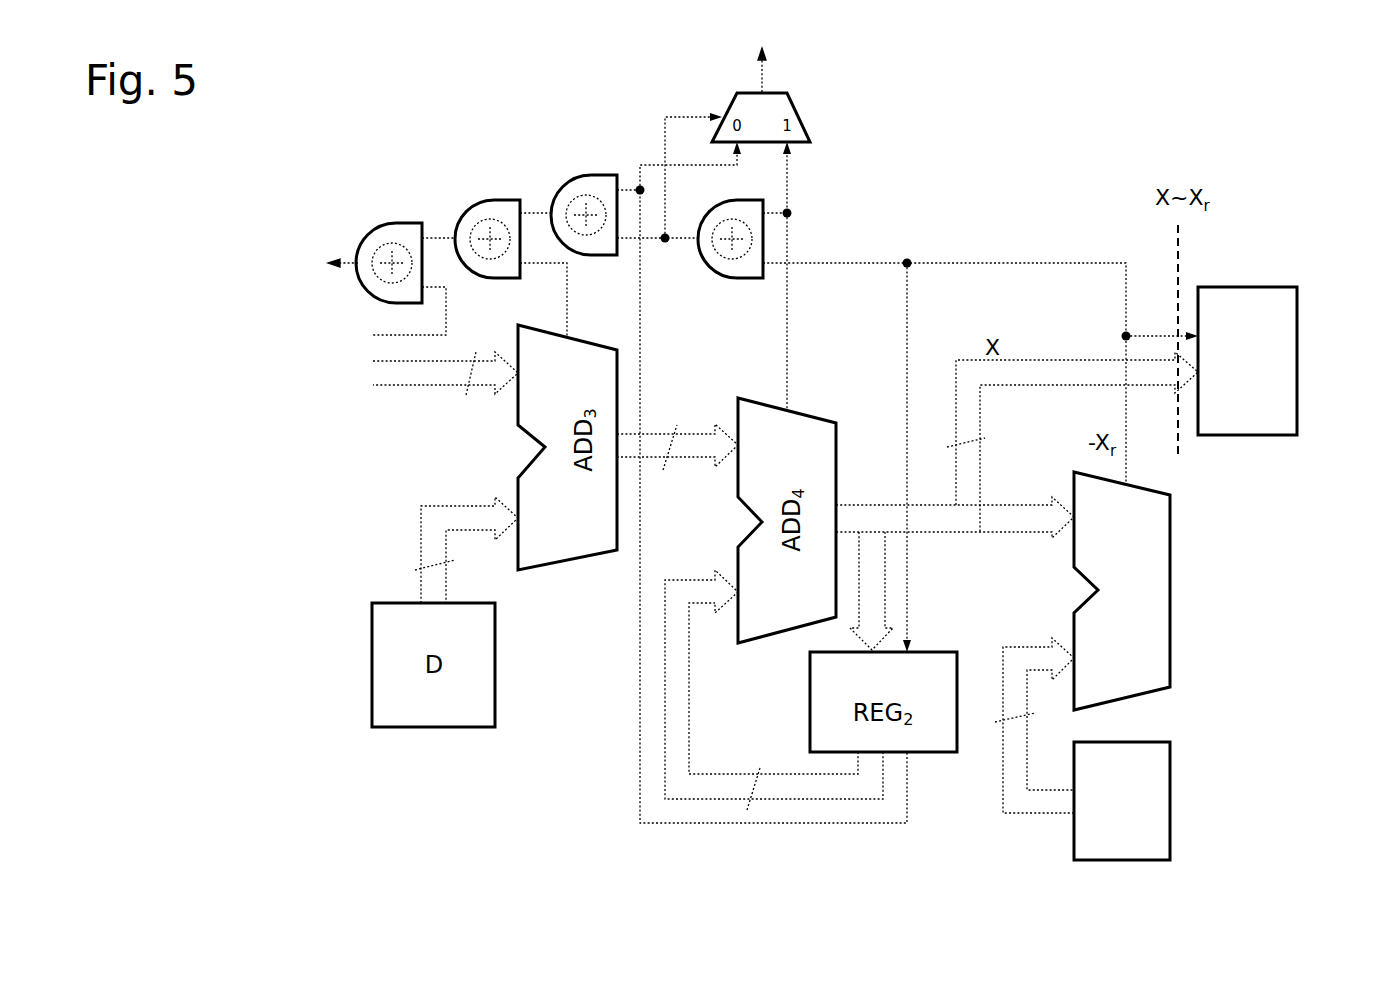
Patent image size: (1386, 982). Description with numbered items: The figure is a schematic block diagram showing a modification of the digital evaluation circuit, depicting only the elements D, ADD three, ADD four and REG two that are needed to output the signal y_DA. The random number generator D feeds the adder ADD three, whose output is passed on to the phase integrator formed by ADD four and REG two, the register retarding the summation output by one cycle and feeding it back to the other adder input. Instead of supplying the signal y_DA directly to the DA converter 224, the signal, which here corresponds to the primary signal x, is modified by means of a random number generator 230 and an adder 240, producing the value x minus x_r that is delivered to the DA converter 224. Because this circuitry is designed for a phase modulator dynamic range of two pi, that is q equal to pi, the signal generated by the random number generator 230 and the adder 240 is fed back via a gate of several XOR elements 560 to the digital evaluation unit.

The XOR elements 560 is at (400, 222).
The DA converter 224 is at (1297, 385).
The adder 240 is at (1173, 600).
The random number generator 230 is at (1173, 805).